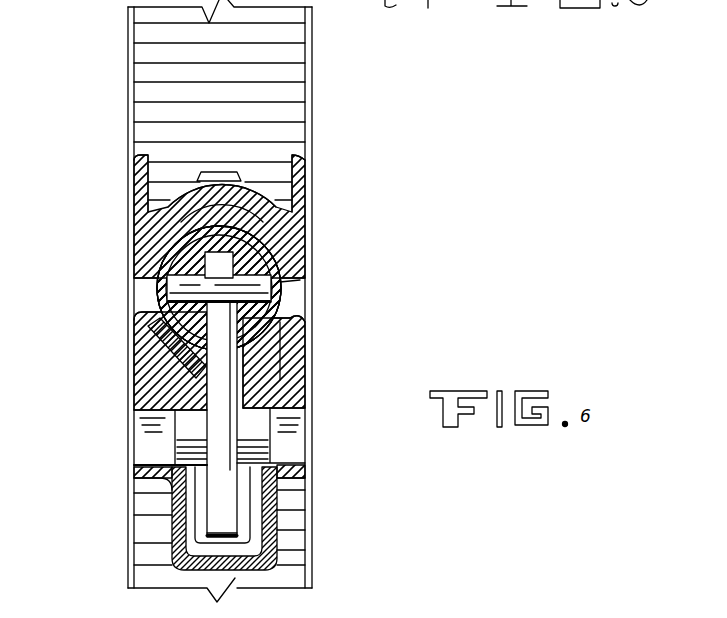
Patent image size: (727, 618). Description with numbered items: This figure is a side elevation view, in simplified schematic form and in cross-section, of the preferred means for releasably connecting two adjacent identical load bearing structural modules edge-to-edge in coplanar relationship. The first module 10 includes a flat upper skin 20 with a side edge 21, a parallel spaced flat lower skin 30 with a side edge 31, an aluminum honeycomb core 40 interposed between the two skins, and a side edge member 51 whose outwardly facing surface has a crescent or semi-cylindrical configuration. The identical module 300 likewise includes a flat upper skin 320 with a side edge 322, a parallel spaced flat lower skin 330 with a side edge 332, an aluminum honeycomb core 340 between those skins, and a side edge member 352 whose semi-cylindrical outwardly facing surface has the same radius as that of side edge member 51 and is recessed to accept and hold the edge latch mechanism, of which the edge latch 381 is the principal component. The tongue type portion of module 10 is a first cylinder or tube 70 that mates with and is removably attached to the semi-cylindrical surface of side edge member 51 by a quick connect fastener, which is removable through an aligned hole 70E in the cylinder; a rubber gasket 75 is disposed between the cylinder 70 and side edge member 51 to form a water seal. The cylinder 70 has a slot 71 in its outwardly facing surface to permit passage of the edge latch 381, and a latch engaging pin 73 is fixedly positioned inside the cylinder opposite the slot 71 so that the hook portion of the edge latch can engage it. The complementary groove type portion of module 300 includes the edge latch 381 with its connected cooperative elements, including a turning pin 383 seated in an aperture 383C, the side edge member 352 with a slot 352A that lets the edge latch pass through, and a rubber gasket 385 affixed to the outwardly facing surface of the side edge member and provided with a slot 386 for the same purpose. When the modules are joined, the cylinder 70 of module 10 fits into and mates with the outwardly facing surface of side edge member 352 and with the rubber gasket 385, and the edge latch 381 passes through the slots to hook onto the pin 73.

The module 10 is at (348, 74).
The flat upper skin 20 is at (128, 76).
The flat lower skin 30 is at (312, 135).
The aluminum honeycomb core 40 is at (305, 82).
The aligned hole 70E is at (300, 124).
The rubber gasket 75 is at (185, 221).
The side edge member 51 is at (305, 218).
The side edge 21 is at (130, 277).
The edge latch 381 is at (233, 260).
The side edge 31 is at (300, 280).
The latch engaging pin 73 is at (175, 292).
The cylinder 70 is at (290, 292).
The side edge 322 is at (128, 315).
The side edge 332 is at (310, 318).
The rubber gasket 385 is at (150, 346).
The slot 352A is at (140, 390).
The slot 71 is at (310, 358).
The side edge member 352 is at (310, 378).
The slot 386 is at (128, 411).
The turning pin 383 is at (178, 428).
The flat lower skin 330 is at (312, 487).
The aperture 383C is at (148, 465).
The identical module 300 is at (350, 493).
The flat upper skin 320 is at (135, 500).
The aluminum honeycomb core 340 is at (303, 530).